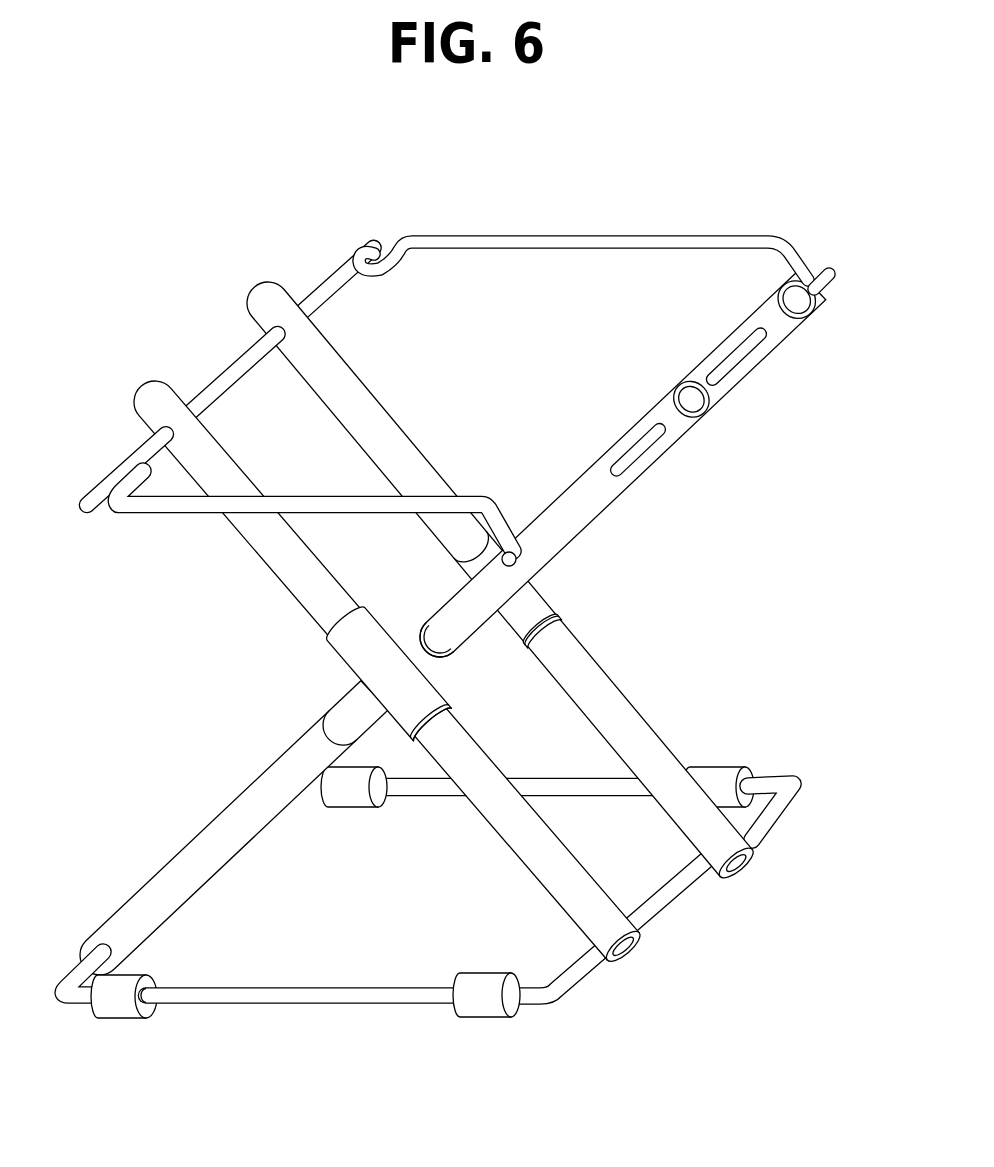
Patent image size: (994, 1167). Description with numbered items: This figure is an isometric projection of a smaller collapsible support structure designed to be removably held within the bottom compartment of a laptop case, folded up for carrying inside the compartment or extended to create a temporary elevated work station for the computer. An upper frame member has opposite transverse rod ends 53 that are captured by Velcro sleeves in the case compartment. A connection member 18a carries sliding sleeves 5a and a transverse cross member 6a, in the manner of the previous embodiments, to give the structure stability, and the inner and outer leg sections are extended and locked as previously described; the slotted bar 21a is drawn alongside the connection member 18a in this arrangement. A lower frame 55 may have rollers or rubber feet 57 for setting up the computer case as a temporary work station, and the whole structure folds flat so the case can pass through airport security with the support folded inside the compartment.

The sliding sleeves 5a is at (343, 698).
The transverse cross member 6a is at (474, 624).
The connection member 18a is at (451, 699).
The slotted guide bar 21a is at (673, 531).
The transverse rod ends 53 is at (540, 236).
The lower frame 55 is at (188, 1010).
The rollers or rubber feet 57 is at (477, 1005).